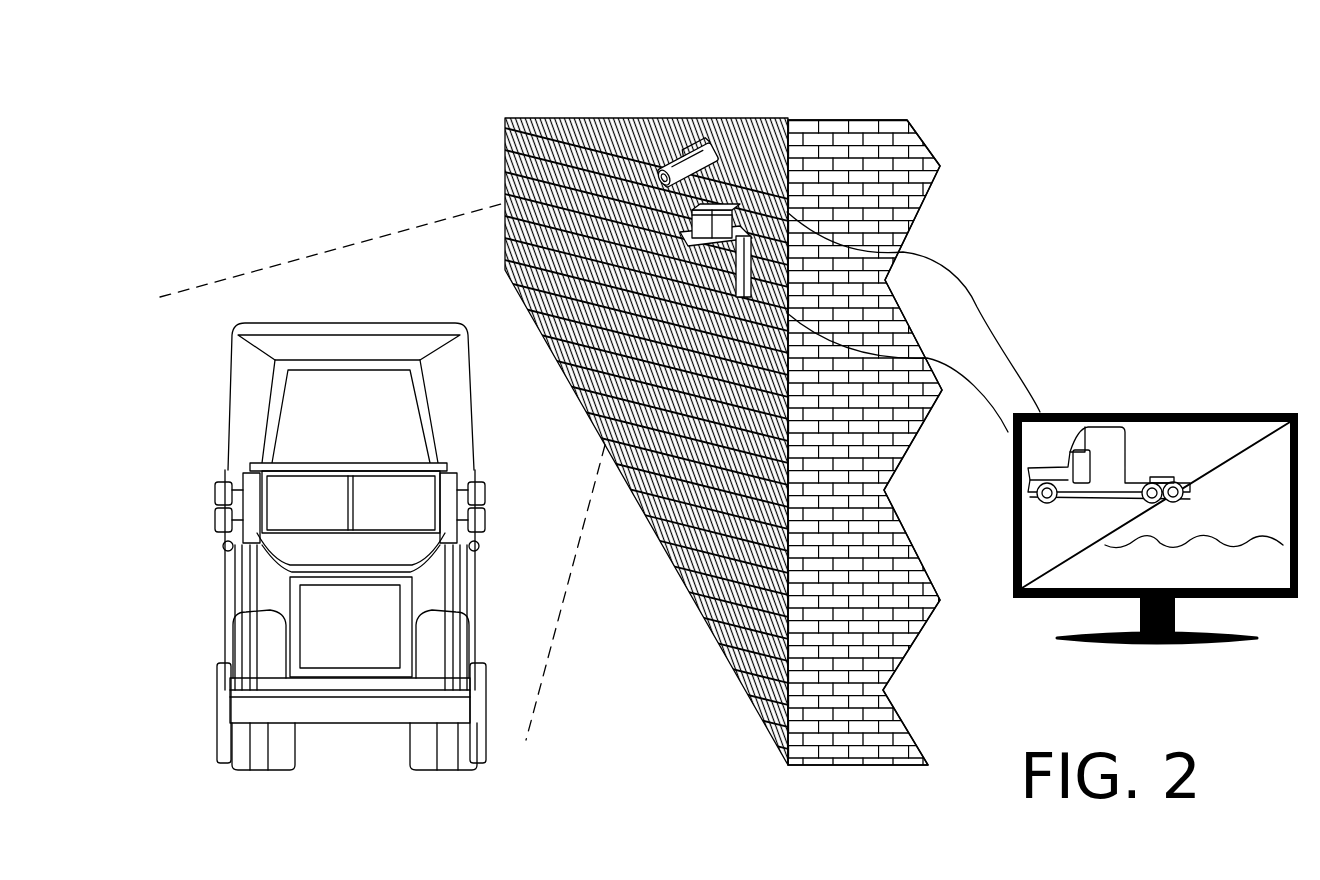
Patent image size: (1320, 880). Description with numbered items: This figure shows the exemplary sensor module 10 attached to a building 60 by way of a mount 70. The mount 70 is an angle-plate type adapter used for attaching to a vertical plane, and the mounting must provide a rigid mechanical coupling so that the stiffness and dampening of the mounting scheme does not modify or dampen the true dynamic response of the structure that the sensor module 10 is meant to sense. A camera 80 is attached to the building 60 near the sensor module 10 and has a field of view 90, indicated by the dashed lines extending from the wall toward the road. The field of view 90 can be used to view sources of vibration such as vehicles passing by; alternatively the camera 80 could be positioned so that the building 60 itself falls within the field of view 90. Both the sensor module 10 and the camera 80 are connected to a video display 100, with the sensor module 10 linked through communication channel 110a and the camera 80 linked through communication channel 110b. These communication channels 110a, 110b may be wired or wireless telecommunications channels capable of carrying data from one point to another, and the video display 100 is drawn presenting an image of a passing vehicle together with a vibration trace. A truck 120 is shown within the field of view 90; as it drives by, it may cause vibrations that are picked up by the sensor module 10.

The sensor module 10 is at (712, 207).
The building 60 is at (505, 137).
The mount 70 is at (742, 262).
The camera 80 is at (680, 150).
The field of view 90 is at (450, 222).
The video display 100 is at (1195, 412).
The communication channel 110a is at (967, 396).
The communication channel 110b is at (977, 306).
The truck 120 is at (508, 777).